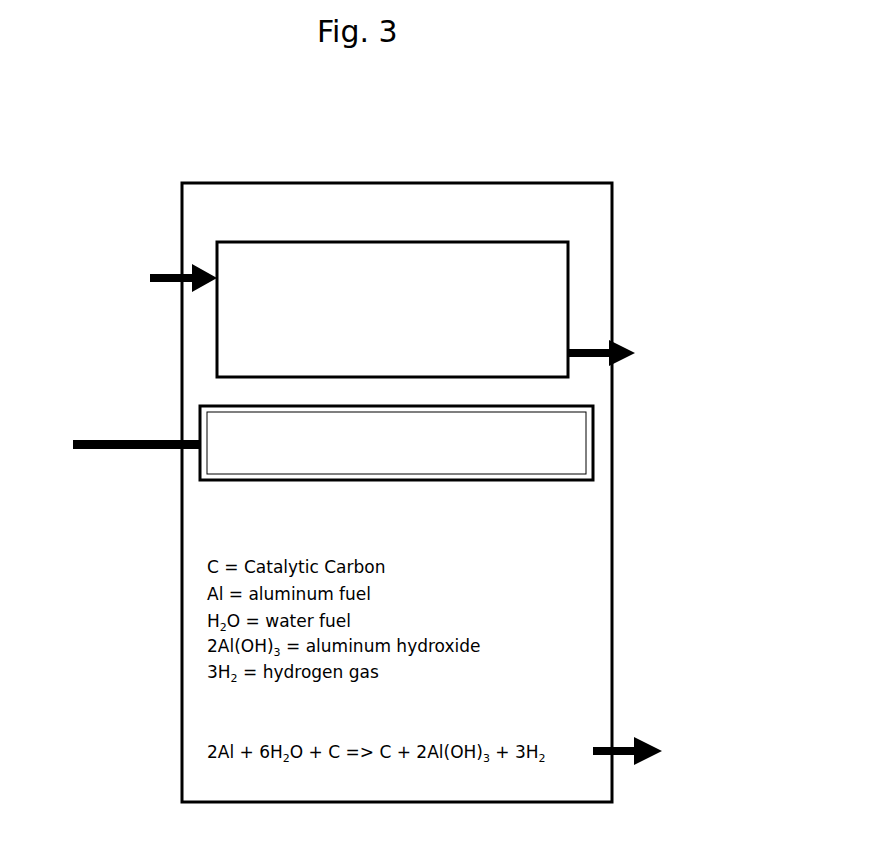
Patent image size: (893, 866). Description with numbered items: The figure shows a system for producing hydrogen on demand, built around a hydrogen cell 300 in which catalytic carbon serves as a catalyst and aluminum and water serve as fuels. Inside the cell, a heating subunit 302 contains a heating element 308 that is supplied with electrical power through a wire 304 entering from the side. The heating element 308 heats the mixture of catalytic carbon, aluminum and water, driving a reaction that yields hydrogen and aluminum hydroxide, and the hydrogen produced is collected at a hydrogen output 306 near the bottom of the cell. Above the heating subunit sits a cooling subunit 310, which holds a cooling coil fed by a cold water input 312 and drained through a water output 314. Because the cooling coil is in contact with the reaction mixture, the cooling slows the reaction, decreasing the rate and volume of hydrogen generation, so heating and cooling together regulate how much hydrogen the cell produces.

The hydrogen cell 300 is at (283, 183).
The heating subunit 302 is at (594, 428).
The wire 304 is at (83, 438).
The hydrogen output 306 is at (643, 737).
The heating element 308 is at (383, 452).
The cooling subunit 310 is at (374, 242).
The cold water input 312 is at (150, 273).
The water output 314 is at (617, 347).